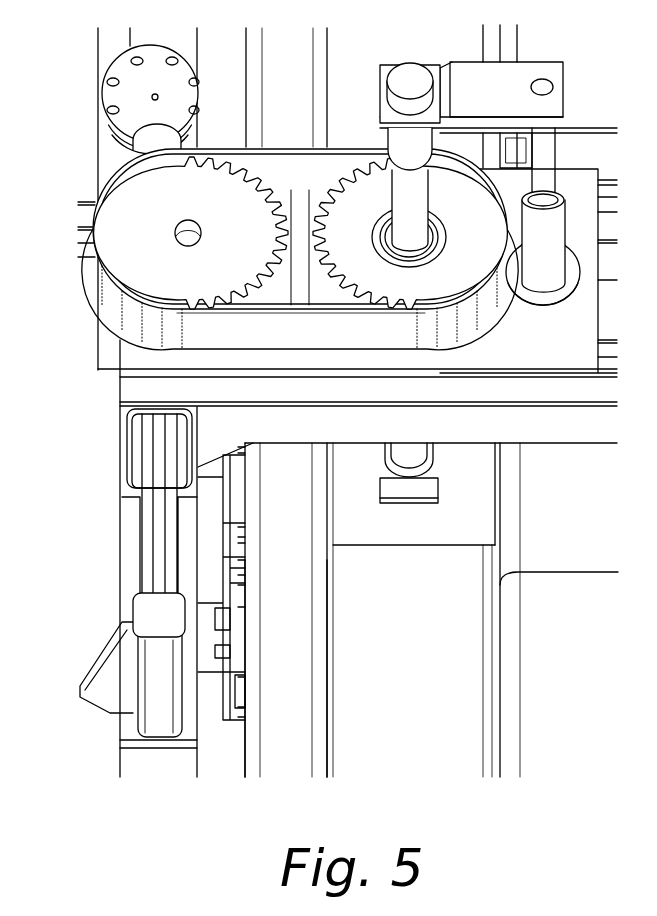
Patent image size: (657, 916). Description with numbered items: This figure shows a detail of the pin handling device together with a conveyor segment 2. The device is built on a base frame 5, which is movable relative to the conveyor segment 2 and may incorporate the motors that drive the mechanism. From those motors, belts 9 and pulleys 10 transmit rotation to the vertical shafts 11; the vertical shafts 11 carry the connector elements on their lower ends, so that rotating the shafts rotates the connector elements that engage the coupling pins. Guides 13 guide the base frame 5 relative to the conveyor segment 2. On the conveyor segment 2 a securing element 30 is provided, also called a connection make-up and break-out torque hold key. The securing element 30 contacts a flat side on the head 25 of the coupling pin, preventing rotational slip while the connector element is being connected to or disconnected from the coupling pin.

The conveyor segment 2 is at (307, 730).
The base frame 5 is at (217, 432).
The belt 9 is at (117, 300).
The pulley 10 is at (142, 197).
The vertical shaft 11 is at (407, 192).
The guide 13 is at (157, 612).
The head 25 is at (433, 460).
The securing element 30 is at (433, 492).